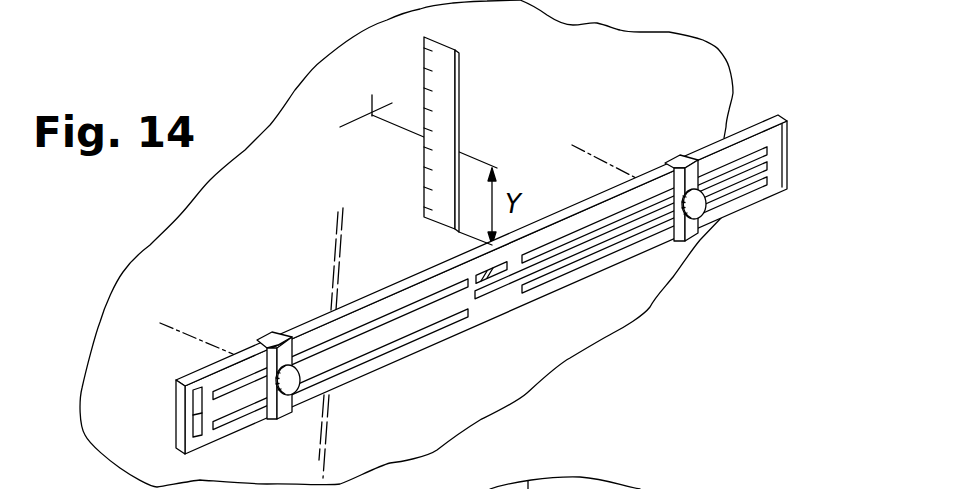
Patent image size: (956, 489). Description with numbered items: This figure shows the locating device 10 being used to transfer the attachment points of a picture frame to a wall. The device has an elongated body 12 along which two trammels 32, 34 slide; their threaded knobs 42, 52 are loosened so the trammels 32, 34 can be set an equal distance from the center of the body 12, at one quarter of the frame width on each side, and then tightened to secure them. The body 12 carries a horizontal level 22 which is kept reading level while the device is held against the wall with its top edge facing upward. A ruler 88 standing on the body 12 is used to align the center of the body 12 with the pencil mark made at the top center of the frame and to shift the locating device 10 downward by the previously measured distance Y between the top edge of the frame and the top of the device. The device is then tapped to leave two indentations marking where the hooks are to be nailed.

The locating device 10 is at (488, 249).
The body 12 is at (507, 297).
The horizontal level 22 is at (484, 282).
The trammel 32 is at (273, 354).
The trammel 34 is at (711, 175).
The threaded knob 42 is at (292, 395).
The threaded knob 52 is at (707, 214).
The ruler 88 is at (459, 87).